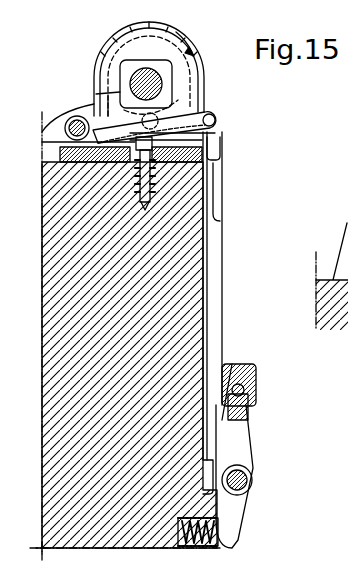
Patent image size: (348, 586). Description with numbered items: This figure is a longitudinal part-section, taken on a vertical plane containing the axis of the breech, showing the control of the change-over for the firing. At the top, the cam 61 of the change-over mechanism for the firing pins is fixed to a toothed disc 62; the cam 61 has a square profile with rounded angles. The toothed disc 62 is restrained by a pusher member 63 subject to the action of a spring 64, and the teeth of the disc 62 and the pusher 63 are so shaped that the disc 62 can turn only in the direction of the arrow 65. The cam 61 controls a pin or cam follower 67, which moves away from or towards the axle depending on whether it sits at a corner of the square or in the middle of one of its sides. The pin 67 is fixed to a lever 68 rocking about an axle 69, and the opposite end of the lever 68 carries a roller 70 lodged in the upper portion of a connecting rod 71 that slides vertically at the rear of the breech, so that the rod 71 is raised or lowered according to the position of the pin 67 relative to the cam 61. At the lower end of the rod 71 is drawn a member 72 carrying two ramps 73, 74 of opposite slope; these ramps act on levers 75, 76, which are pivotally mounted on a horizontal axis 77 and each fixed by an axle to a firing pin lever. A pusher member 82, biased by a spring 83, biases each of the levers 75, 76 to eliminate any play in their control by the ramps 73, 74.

The cam 61 is at (127, 37).
The toothed disc 62 is at (204, 140).
The pusher member 63 is at (125, 150).
The spring 64 is at (150, 203).
The arrow 65 is at (196, 46).
The pin or cam follower 67 is at (100, 92).
The lever 68 is at (178, 92).
The axle 69 is at (82, 118).
The roller 70 is at (216, 119).
The connecting rod 71 is at (213, 254).
The plate 72 is at (246, 384).
The ramp 73 is at (246, 366).
The ramp 74 is at (236, 382).
The lever 75 is at (238, 413).
The lever 76 is at (238, 441).
The horizontal axis 77 is at (252, 481).
The pusher member 82 is at (203, 548).
The spring 83 is at (183, 548).